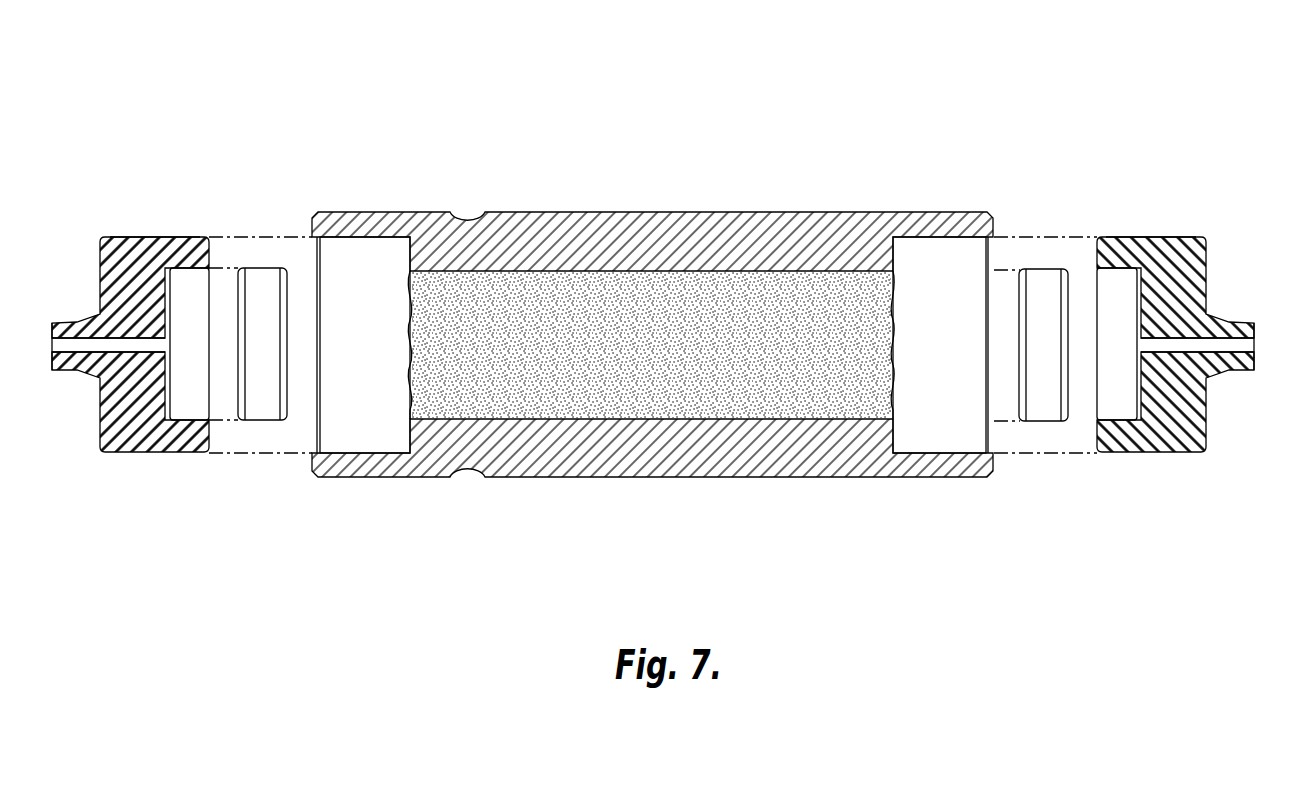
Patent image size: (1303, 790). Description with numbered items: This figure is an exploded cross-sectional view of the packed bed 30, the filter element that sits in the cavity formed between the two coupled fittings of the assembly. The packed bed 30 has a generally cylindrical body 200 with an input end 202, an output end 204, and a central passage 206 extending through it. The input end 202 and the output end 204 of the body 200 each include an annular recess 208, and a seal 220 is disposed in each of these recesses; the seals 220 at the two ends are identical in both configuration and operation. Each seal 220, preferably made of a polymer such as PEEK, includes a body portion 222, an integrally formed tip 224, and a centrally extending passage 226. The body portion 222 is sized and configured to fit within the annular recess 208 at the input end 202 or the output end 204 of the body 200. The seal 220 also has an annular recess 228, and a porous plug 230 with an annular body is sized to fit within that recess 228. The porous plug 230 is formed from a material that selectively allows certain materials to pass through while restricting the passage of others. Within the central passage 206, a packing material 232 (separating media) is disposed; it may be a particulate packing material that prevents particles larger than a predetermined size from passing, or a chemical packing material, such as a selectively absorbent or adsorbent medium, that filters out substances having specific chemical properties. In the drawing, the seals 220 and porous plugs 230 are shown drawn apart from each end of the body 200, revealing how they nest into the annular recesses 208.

The packed bed 30 is at (717, 100).
The generally cylindrical body 200 is at (713, 212).
The input end 202 is at (312, 466).
The output end 204 is at (993, 464).
The central passage 206 is at (445, 298).
The annular recess 208 is at (365, 260).
The seal 220 is at (102, 237).
The body portion 222 is at (158, 236).
The tip 224 is at (75, 315).
The centrally extending passage 226 is at (82, 345).
The annular recess 228 is at (193, 405).
The porous plug 230 is at (262, 270).
The packing material 232 is at (600, 322).